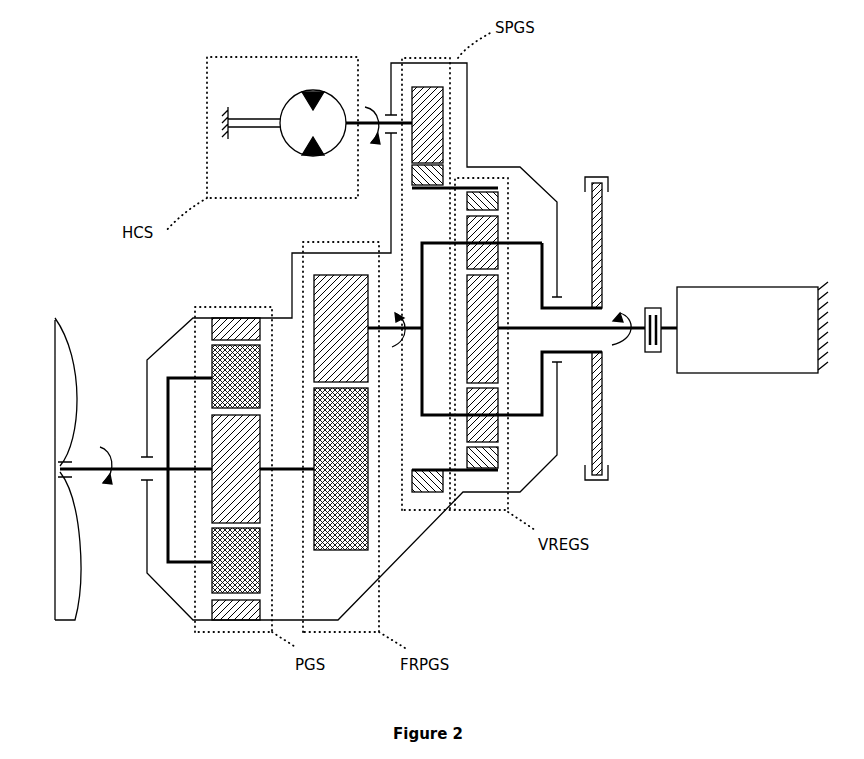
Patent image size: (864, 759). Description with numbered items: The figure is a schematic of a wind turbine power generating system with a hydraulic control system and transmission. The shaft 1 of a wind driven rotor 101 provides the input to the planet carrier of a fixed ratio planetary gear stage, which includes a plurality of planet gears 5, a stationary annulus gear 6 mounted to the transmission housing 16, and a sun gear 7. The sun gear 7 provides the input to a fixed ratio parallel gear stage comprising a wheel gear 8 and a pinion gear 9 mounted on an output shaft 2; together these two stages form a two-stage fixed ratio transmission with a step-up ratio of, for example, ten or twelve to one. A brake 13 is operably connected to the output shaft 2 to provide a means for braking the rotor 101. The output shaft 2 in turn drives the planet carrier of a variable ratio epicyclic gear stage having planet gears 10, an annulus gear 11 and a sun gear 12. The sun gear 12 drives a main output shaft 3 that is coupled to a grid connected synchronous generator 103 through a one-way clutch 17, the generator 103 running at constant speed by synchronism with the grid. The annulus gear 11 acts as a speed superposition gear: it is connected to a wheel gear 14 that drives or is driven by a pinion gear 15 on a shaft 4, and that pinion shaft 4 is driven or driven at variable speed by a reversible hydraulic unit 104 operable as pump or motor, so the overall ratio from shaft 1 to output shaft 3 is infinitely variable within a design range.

The shaft 1 is at (90, 480).
The output shaft 2 is at (373, 330).
The output shaft 3 is at (608, 333).
The shaft 4 is at (348, 127).
The planet gears 5 is at (260, 363).
The stationary annulus gear 6 is at (263, 323).
The sun gear 7 is at (260, 418).
The wheel gear 8 is at (370, 495).
The pinion gear 9 is at (348, 273).
The planet gears 10 is at (498, 425).
The annulus gear 11 is at (500, 193).
The sun gear 12 is at (498, 280).
The brake 13 is at (603, 205).
The wheel gear 14 is at (462, 168).
The pinion gear 15 is at (412, 86).
The transmission housing 16 is at (387, 570).
The one-way clutch 17 is at (652, 355).
The wind driven rotor 101 is at (55, 340).
The grid connected synchronous generator 103 is at (773, 287).
The reversible hydraulic unit 104 is at (292, 97).